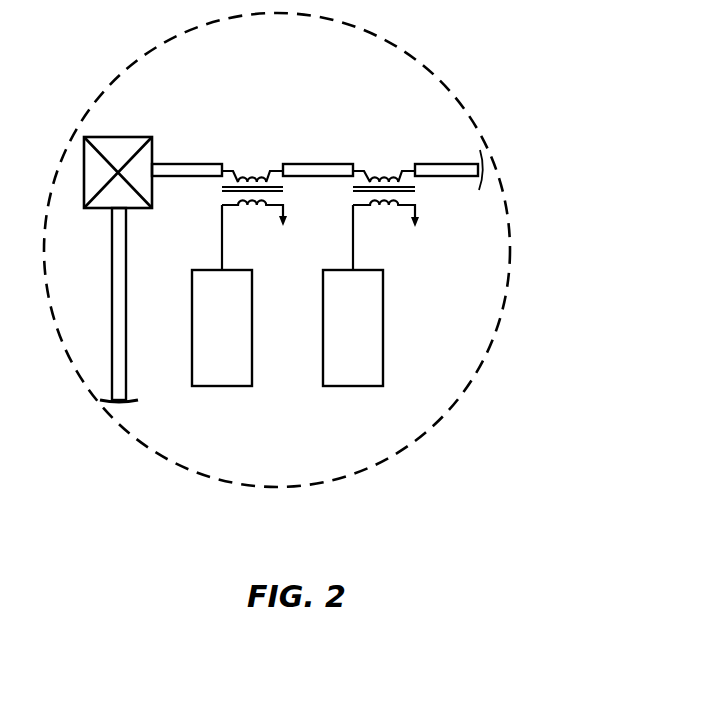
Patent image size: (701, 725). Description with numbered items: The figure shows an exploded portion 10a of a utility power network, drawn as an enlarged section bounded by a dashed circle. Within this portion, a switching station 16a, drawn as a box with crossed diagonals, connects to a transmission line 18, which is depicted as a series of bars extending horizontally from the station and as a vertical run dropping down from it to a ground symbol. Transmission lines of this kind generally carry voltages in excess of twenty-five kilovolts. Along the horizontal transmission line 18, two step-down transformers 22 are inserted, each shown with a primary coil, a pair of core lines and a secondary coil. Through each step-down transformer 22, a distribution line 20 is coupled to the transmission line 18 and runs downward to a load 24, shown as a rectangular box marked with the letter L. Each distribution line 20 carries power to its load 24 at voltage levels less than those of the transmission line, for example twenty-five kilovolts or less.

The exploded portion of the utility power network 10a is at (519, 95).
The switching station 16a is at (123, 137).
The transmission line 18 is at (319, 163).
The step-down transformer 22 is at (256, 145).
The distribution line 20 is at (220, 256).
The load 24 is at (253, 331).